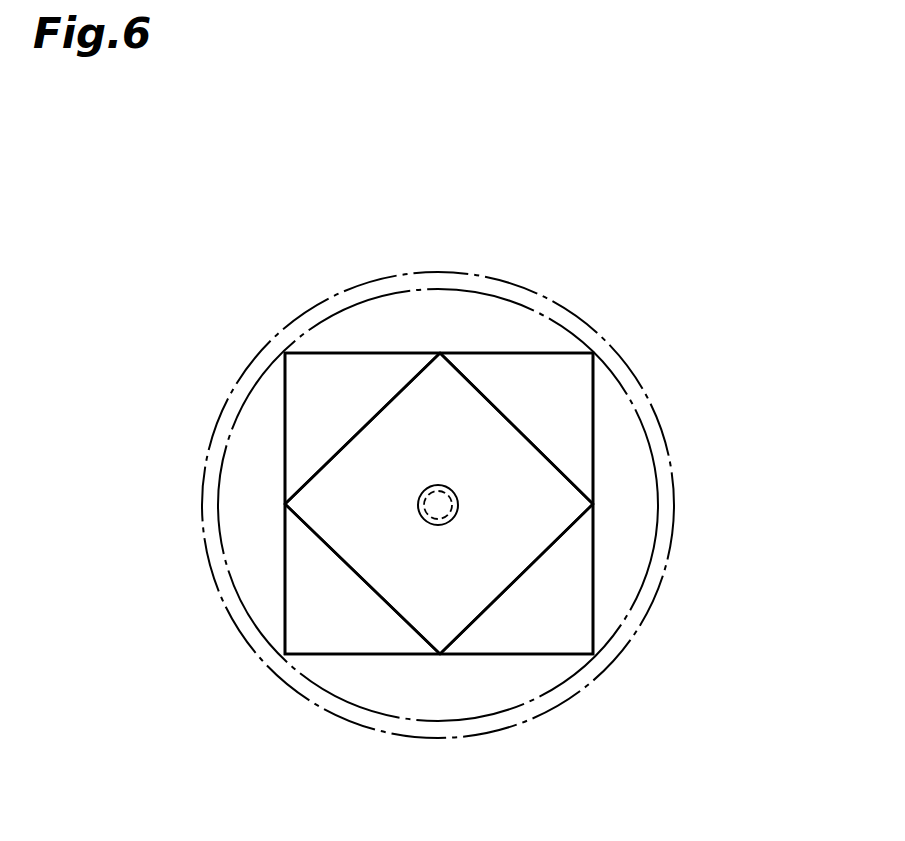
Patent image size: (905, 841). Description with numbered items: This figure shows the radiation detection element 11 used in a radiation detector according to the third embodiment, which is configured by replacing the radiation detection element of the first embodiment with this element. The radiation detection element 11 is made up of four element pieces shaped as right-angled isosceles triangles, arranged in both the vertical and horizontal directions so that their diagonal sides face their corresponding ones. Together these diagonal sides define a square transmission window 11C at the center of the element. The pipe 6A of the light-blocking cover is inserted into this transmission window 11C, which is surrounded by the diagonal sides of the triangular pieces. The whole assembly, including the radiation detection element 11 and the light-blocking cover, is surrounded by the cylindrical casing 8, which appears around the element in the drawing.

The cylindrical casing 8 is at (572, 310).
The radiation detection element 11 is at (383, 337).
The transmission window 11C is at (467, 450).
The pipe 6A is at (418, 505).